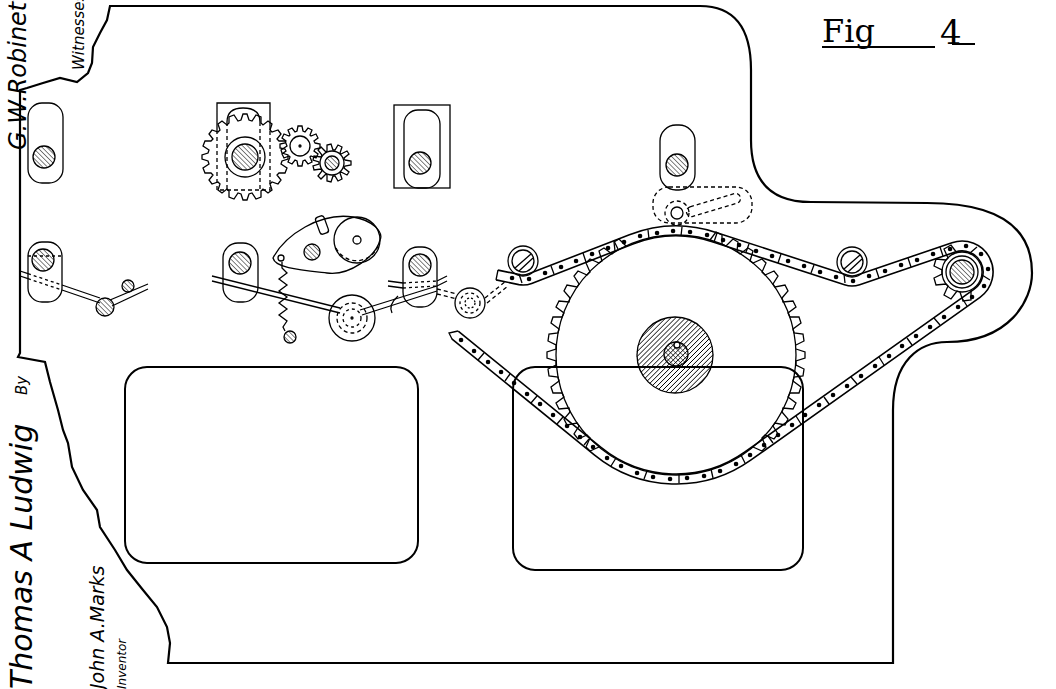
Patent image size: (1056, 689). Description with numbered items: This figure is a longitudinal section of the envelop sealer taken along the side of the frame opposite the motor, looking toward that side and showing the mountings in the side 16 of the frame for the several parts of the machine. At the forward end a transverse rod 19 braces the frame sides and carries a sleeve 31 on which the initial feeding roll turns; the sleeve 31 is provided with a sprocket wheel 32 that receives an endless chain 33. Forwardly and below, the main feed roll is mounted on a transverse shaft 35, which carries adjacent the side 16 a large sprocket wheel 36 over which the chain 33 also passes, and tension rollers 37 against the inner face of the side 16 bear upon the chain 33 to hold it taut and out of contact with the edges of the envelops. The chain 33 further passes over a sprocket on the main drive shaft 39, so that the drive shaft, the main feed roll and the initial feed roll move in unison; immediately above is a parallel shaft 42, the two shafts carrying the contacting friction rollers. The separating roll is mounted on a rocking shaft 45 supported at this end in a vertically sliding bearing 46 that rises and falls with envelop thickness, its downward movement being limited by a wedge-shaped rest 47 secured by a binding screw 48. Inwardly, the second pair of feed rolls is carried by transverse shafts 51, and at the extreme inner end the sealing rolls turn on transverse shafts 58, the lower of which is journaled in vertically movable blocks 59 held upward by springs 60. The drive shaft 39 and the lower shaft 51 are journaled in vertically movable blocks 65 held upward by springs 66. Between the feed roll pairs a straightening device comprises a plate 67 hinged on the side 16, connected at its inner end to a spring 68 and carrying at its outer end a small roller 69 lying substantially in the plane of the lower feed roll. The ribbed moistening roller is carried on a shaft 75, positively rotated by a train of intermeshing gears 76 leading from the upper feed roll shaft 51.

The side of the frame 16 is at (525, 334).
The transverse rod 19 is at (972, 279).
The sleeve 31 is at (977, 261).
The sprocket wheel 32 is at (942, 290).
The endless chain 33 is at (866, 368).
The transverse shaft 35 is at (690, 353).
The large sprocket wheel 36 is at (676, 353).
The tension rollers 37 is at (530, 249).
The shaft 39 is at (428, 257).
The parallel shaft 42 is at (437, 161).
The rocking shaft 45 is at (665, 163).
The vertically sliding bearing 46 is at (696, 160).
The rest 47 is at (702, 194).
The screw 48 is at (671, 212).
The transverse shafts 51 is at (233, 157).
The transverse shafts 58 is at (55, 157).
The vertically movable blocks 59 is at (60, 248).
The springs 60 is at (86, 299).
The vertically movable blocks 65 is at (236, 246).
The springs 66 is at (449, 306).
The plate 67 is at (328, 232).
The spring 68 is at (282, 325).
The small roller 69 is at (362, 258).
The shaft 75 is at (350, 159).
The train of intermeshing gears 76 is at (328, 143).